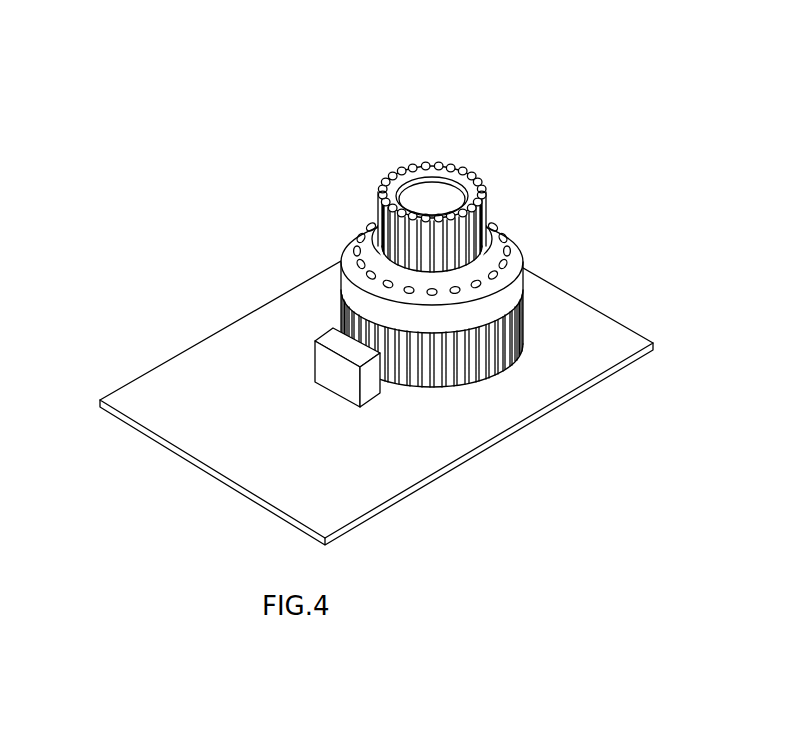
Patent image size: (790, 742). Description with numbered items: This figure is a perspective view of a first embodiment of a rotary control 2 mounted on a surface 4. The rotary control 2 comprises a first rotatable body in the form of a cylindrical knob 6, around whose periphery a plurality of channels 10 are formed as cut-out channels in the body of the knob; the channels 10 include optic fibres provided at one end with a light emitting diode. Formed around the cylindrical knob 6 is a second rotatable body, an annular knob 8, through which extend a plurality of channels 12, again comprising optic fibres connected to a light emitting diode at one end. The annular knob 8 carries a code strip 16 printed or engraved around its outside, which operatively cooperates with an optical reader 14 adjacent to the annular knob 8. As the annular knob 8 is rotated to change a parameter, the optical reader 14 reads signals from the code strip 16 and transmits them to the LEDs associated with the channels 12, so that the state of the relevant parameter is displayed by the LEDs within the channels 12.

The rotary control 2 is at (346, 284).
The surface 4 is at (122, 397).
The cylindrical knob 6 is at (430, 190).
The annular knob 8 is at (496, 284).
The channels 10 is at (392, 168).
The channels 12 is at (498, 222).
The optical reader 14 is at (330, 362).
The code strip 16 is at (463, 368).